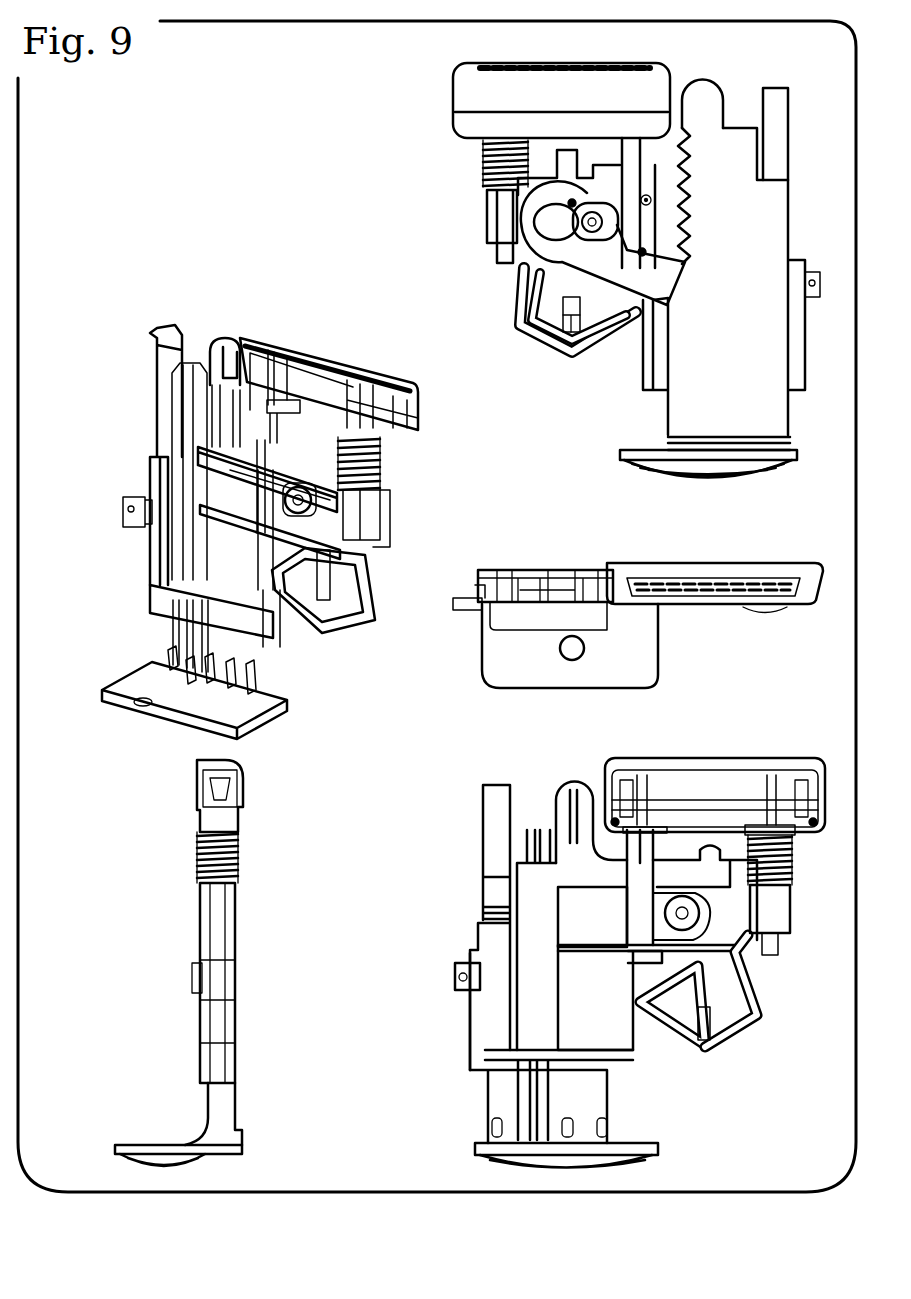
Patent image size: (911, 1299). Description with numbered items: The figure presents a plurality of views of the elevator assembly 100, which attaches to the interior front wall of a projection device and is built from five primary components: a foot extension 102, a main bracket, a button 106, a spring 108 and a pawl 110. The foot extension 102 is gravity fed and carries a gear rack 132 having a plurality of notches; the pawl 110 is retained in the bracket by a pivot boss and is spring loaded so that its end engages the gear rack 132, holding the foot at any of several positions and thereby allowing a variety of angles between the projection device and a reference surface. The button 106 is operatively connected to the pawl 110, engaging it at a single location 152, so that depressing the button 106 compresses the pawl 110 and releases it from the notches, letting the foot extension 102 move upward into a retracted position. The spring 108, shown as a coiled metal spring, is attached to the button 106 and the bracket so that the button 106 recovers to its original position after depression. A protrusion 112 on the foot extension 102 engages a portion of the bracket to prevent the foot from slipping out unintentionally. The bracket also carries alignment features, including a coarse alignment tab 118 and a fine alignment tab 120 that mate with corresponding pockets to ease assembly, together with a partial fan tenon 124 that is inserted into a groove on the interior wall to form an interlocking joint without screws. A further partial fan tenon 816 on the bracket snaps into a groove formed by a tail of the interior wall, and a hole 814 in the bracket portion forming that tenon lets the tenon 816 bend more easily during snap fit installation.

The elevator assembly 100 is at (143, 873).
The foot extension 102 is at (768, 212).
The button 106 is at (692, 760).
The spring 108 is at (793, 857).
The pawl 110 is at (518, 250).
The protrusion 112 is at (778, 88).
The coarse alignment tab 118 is at (700, 84).
The fine alignment tab 120 is at (333, 432).
The partial fan tenon 124 is at (467, 1053).
The gear rack 132 is at (686, 192).
The single location 152 is at (632, 246).
The hole 814 is at (600, 330).
The partial fan tenon 816 is at (560, 308).